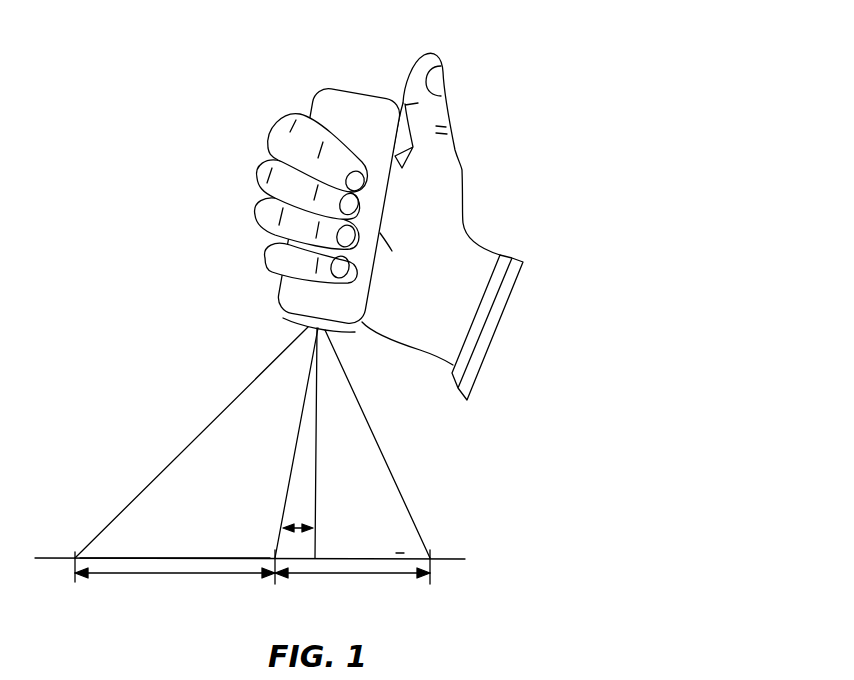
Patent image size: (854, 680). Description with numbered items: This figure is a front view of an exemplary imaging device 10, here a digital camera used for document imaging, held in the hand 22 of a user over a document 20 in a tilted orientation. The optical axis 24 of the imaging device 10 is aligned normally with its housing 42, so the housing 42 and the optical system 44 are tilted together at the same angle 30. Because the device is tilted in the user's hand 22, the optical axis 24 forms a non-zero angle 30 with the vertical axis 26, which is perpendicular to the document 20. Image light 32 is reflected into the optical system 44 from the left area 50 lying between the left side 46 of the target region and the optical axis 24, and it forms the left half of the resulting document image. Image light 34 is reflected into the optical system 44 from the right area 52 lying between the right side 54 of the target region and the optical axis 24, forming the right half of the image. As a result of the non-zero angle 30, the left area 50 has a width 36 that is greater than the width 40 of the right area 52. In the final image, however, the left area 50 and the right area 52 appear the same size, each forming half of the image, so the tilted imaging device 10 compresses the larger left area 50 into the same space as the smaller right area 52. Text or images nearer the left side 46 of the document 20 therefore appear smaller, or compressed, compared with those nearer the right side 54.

The imaging device 10 is at (312, 170).
The document 20 is at (50, 556).
The hand 22 is at (462, 167).
The optical axis 24 is at (287, 487).
The vertical axis 26 is at (316, 477).
The angle 30 is at (309, 528).
The image light 32 is at (223, 410).
The image light 34 is at (380, 440).
The width 36 is at (176, 575).
The width 40 is at (362, 575).
The housing 42 is at (340, 82).
The optical system 44 is at (258, 290).
The left side 46 is at (77, 556).
The left area 50 is at (190, 556).
The right area 52 is at (400, 558).
The right side 54 is at (432, 557).